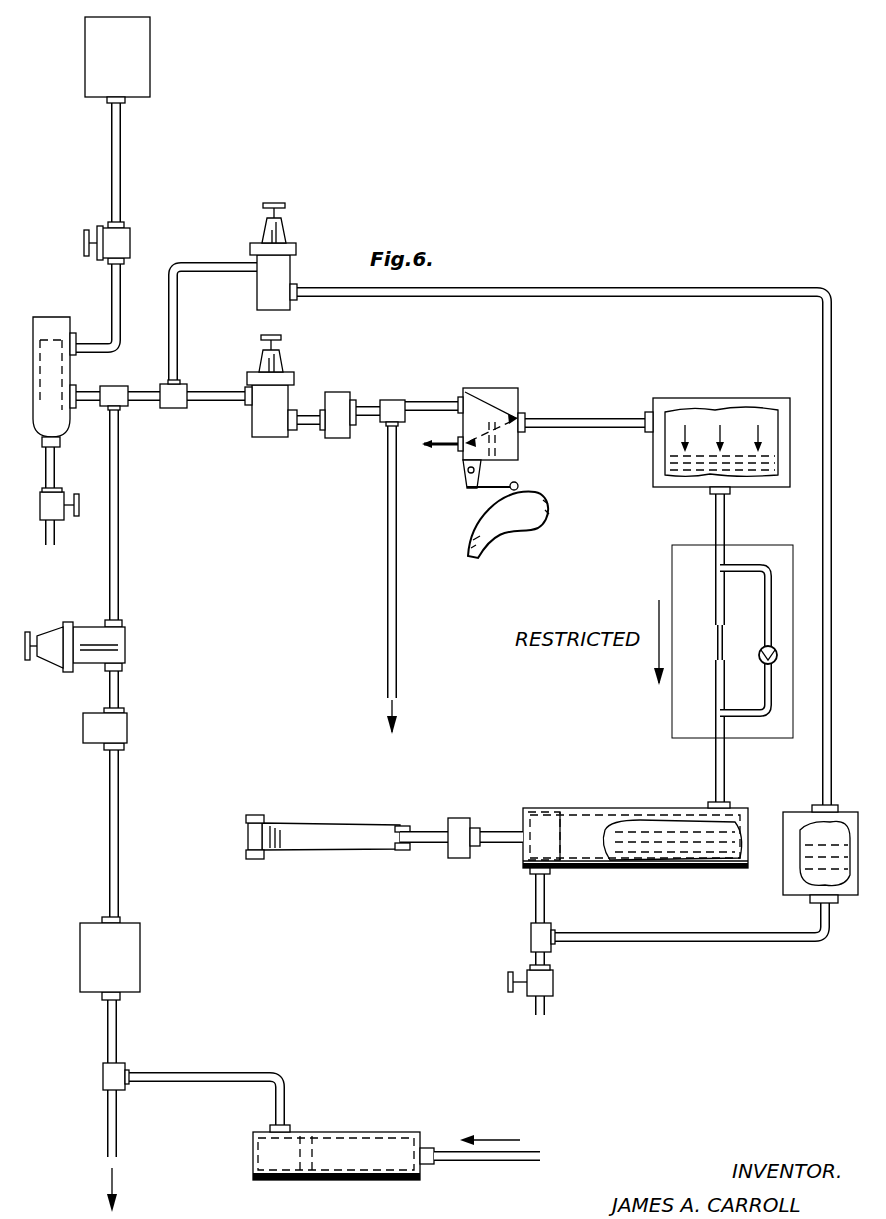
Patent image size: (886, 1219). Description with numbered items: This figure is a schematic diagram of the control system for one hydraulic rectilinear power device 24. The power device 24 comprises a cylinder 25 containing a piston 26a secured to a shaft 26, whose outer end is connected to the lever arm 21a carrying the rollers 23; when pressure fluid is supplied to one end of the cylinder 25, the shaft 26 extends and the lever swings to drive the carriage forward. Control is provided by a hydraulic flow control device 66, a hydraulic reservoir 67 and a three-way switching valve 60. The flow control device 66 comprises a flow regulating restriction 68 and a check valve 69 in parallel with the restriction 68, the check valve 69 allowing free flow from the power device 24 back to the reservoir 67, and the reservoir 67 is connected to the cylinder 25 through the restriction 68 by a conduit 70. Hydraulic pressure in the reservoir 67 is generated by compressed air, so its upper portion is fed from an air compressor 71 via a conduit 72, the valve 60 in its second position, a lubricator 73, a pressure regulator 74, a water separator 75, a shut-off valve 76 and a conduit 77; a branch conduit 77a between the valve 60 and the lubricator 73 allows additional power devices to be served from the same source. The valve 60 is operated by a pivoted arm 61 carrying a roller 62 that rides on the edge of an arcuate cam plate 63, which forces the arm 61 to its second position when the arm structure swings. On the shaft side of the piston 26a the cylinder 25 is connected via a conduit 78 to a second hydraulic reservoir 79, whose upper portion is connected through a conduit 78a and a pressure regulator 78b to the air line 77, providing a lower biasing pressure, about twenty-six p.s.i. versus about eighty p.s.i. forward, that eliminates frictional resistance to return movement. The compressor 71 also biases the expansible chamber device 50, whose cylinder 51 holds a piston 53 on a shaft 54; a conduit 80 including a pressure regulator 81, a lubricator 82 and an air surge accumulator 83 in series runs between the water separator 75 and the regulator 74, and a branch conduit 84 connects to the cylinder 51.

The air compressor 71 is at (138, 88).
The conduit 72 is at (121, 163).
The shut-off valve 76 is at (130, 240).
The water separator 75 is at (55, 322).
The conduit 77 is at (218, 392).
The branch conduit 77a is at (388, 531).
The pressure regulator 78b is at (285, 244).
The conduit 78a is at (832, 492).
The conduit 78 is at (643, 934).
The lubricator 73 is at (336, 396).
The pressure regulator 74 is at (268, 437).
The three-way switching valve 60 is at (513, 394).
The pivoted arm 61 is at (468, 489).
The roller 62 is at (519, 485).
The cam plate 63 is at (539, 516).
The hydraulic reservoir 67 is at (778, 470).
The hydraulic flow control device 66 is at (748, 641).
The flow regulating restriction 68 is at (717, 638).
The check valve 69 is at (778, 661).
The conduit 70 is at (726, 648).
The hydraulic rectilinear power device 24 is at (635, 820).
The cylinder 25 is at (582, 862).
The shaft 26 is at (492, 834).
The piston 26a is at (550, 812).
The lever arm 21a is at (332, 817).
The rollers 23 is at (258, 815).
The hydraulic reservoir 79 is at (784, 888).
The conduit 80 is at (120, 528).
The pressure regulator 81 is at (125, 646).
The lubricator 82 is at (127, 729).
The air surge accumulator 83 is at (140, 946).
The branch conduits 84 is at (201, 1070).
The expansible chamber device 50 is at (336, 1150).
The cylinder 51 is at (298, 1180).
The piston 53 is at (311, 1134).
The shaft 54 is at (435, 1148).